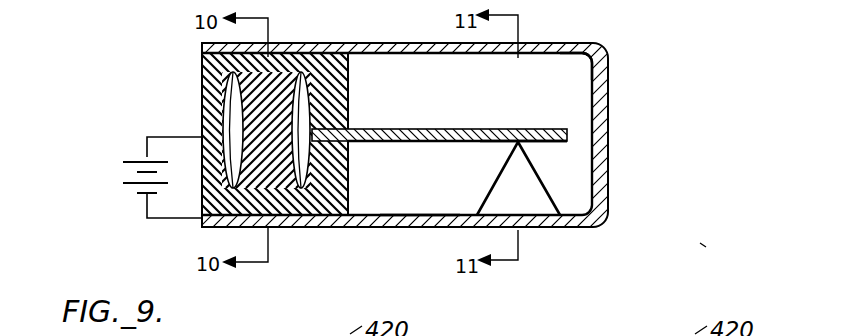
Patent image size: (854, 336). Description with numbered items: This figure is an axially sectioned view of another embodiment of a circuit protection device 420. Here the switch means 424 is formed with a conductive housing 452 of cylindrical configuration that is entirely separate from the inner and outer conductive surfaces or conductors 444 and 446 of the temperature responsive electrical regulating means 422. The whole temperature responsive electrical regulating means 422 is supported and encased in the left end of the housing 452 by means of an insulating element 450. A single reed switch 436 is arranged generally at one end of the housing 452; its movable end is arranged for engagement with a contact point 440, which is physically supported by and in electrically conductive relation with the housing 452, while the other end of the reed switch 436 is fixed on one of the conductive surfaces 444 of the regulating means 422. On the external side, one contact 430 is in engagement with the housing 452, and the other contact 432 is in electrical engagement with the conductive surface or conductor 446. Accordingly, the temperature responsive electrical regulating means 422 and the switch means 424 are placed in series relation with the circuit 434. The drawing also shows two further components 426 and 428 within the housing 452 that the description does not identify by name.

The circuit protection device 420 is at (645, 72).
The temperature responsive electrical regulating means 422 is at (297, 65).
The switch means 424 is at (430, 193).
The first disc 426 is at (238, 72).
The rod 428 is at (493, 123).
The contact 430 is at (173, 220).
The contact 432 is at (185, 137).
The circuit 434 is at (140, 208).
The reed switch 436 is at (490, 145).
The contact point 440 is at (540, 168).
The conductive surface 444 is at (300, 123).
The conductive surface 446 is at (232, 172).
The insulating element 450 is at (343, 80).
The conductive housing 452 is at (570, 43).